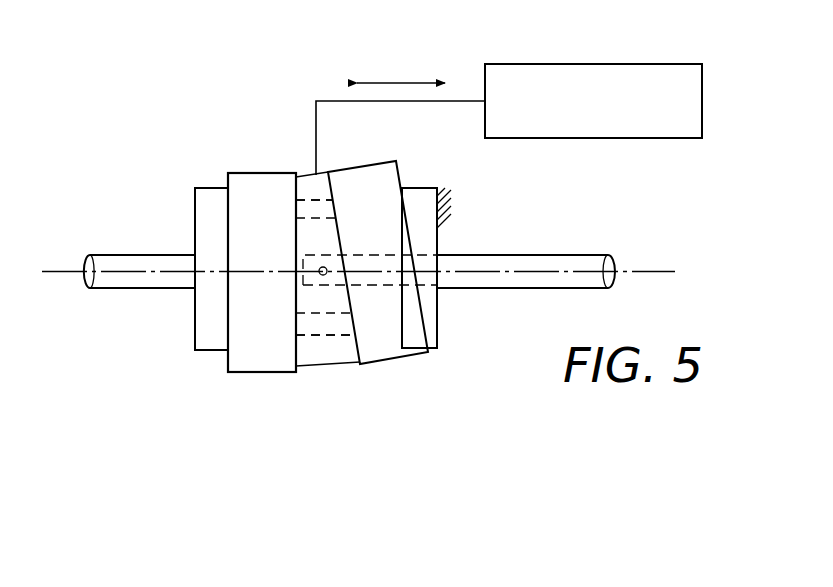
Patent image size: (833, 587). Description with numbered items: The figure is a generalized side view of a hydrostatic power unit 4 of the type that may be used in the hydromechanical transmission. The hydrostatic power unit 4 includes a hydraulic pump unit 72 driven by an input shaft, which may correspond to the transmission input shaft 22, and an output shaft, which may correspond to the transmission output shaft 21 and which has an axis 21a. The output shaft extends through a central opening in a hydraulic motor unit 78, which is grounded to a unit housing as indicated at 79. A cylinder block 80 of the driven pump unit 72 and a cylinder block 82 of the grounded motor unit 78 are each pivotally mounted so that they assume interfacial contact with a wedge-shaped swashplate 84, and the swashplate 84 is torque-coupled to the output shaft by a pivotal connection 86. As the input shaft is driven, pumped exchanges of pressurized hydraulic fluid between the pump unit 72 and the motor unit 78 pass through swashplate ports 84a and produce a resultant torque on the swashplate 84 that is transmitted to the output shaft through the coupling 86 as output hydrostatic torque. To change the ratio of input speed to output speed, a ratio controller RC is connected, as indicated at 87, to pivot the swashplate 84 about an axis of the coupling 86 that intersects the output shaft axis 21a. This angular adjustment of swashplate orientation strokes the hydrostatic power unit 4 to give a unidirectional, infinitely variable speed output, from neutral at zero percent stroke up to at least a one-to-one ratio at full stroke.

The hydrostatic power unit 4 is at (303, 227).
The transmission input shaft 22 is at (118, 255).
The output shaft 21 is at (583, 255).
The shaft axis 21a is at (643, 271).
The hydraulic pump unit 72 is at (203, 357).
The cylinder block 80 is at (278, 353).
The cylinder block 82 is at (405, 336).
The wedge-shaped swashplate 84 is at (327, 349).
The swashplate ports 84a is at (324, 201).
The pivotal connection 86 is at (325, 266).
The hydraulic motor unit 78 is at (422, 366).
The unit housing ground 79 is at (440, 192).
The ratio controller connection 87 is at (318, 173).
The ratio controller RC is at (702, 76).